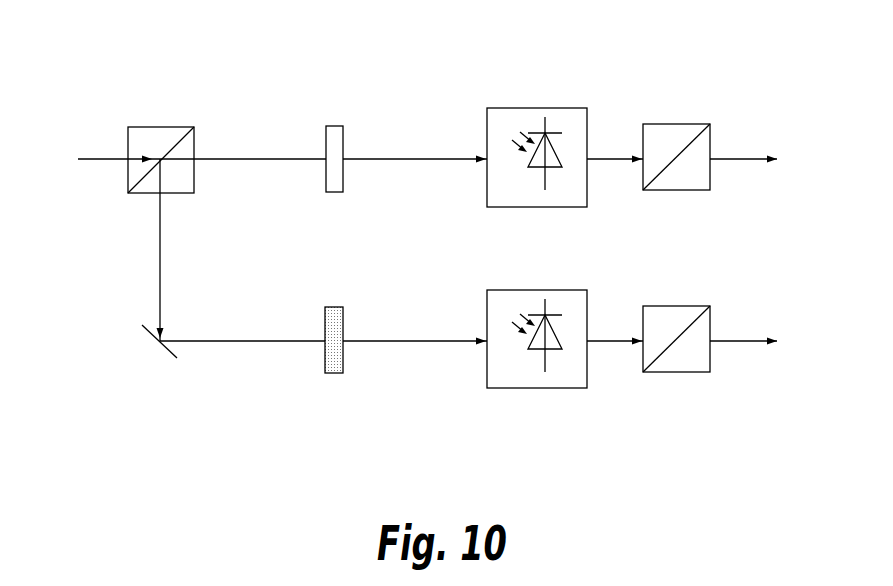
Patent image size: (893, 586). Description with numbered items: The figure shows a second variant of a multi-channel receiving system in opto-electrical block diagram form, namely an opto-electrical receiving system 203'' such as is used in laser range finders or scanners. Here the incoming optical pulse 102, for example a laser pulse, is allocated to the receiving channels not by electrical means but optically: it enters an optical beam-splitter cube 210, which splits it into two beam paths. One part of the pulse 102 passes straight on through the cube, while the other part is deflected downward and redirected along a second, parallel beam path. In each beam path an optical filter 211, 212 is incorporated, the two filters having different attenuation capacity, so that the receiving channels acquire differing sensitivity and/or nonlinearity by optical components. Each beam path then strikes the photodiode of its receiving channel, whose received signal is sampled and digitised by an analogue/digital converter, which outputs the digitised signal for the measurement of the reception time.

The pulse 102 is at (100, 160).
The optical beam-splitter cube 210 is at (143, 127).
The optical filter 211 is at (325, 133).
The optical filter 212 is at (327, 313).
The opto-electrical receiving system 203'' is at (233, 396).